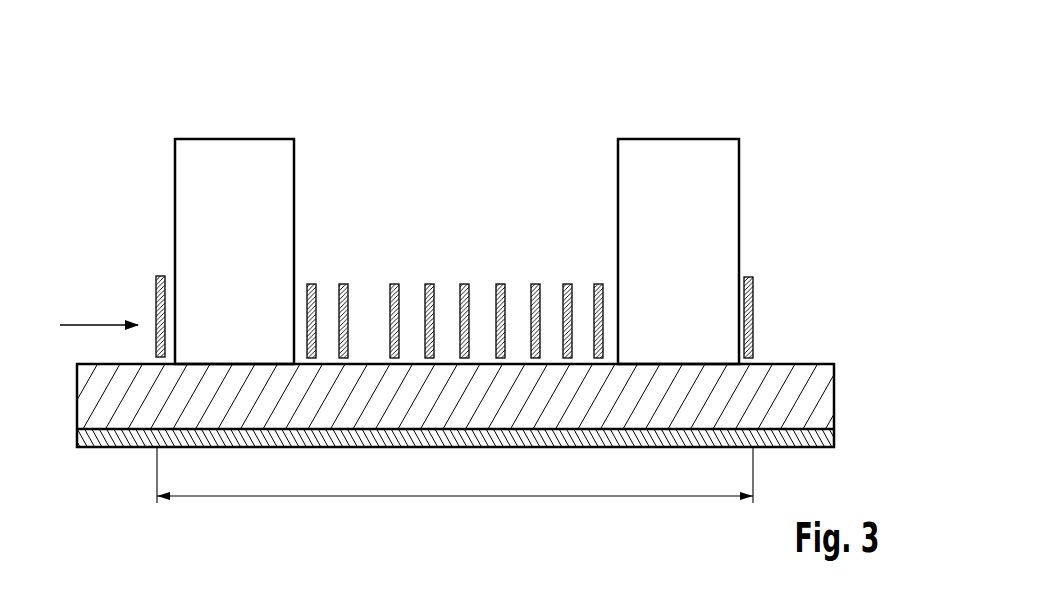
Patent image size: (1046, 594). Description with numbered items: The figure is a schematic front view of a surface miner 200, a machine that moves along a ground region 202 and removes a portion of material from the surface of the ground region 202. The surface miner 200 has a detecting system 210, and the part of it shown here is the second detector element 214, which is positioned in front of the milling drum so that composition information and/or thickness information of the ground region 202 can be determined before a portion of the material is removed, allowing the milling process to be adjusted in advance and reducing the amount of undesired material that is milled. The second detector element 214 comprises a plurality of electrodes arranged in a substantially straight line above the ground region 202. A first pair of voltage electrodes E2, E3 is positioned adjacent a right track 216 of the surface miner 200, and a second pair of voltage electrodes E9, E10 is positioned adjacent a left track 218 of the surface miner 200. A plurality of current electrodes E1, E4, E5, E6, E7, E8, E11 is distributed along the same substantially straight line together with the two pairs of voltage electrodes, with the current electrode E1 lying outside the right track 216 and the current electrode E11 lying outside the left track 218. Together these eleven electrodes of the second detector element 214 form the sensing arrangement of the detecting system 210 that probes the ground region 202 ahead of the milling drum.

The surface miner 200 is at (775, 92).
The ground region 202 is at (815, 338).
The detecting system 210 is at (100, 322).
The second detector element 214 is at (505, 176).
The right track 216 is at (243, 138).
The left track 218 is at (682, 138).
The current electrode E1 is at (160, 275).
The voltage electrode E2 is at (308, 283).
The voltage electrode E3 is at (340, 283).
The current electrode E4 is at (393, 283).
The current electrode E5 is at (428, 283).
The current electrode E6 is at (463, 283).
The current electrode E7 is at (498, 283).
The current electrode E8 is at (533, 283).
The voltage electrode E9 is at (566, 283).
The voltage electrode E10 is at (598, 283).
The current electrode E11 is at (748, 276).